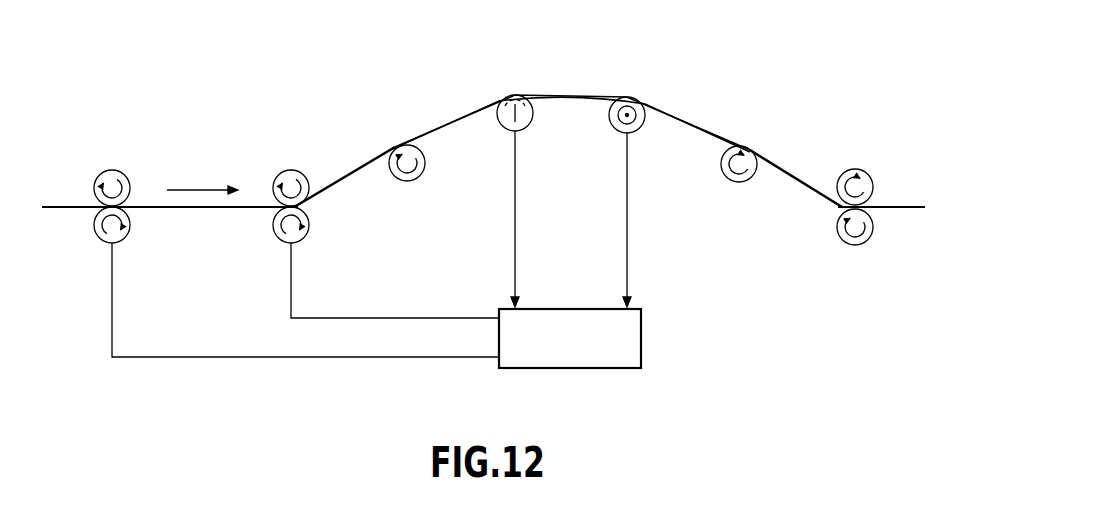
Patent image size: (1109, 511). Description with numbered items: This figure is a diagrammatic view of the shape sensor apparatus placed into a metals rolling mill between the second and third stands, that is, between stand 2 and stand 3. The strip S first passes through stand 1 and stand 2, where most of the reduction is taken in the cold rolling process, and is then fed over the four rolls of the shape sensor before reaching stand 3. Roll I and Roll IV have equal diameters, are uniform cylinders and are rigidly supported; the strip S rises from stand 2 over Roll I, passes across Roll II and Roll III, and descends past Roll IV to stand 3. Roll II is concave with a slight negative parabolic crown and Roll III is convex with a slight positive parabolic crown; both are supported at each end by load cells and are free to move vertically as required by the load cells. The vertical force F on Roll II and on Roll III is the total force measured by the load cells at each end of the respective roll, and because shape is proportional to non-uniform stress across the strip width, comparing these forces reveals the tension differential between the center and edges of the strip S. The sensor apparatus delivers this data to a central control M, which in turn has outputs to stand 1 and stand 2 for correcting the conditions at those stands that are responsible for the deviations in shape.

The stand 1 is at (112, 189).
The stand 2 is at (291, 189).
The stand 3 is at (855, 190).
The Roll I is at (407, 177).
The Roll II is at (518, 201).
The Roll III is at (619, 202).
The Roll IV is at (728, 170).
The strip S is at (357, 172).
The vertical force F is at (588, 291).
The central control M is at (376, 305).